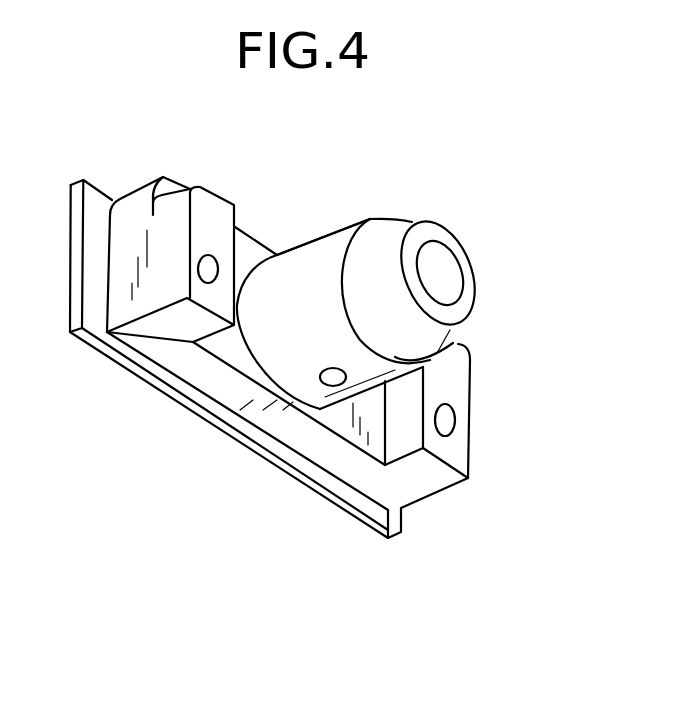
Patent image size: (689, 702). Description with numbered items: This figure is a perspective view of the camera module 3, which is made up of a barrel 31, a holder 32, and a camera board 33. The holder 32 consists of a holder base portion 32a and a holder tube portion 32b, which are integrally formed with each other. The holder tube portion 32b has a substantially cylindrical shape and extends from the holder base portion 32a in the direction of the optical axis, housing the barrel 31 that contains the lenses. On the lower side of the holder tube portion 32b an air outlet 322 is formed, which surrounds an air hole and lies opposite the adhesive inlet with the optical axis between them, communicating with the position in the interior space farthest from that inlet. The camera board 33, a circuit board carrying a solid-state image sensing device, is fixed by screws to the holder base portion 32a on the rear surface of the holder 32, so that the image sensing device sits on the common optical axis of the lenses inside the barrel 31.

The camera module 3 is at (538, 179).
The barrel 31 is at (383, 243).
The holder 32 is at (215, 190).
The holder base portion 32a is at (258, 237).
The holder tube portion 32b is at (260, 340).
The air outlet 322 is at (330, 380).
The camera board 33 is at (108, 191).